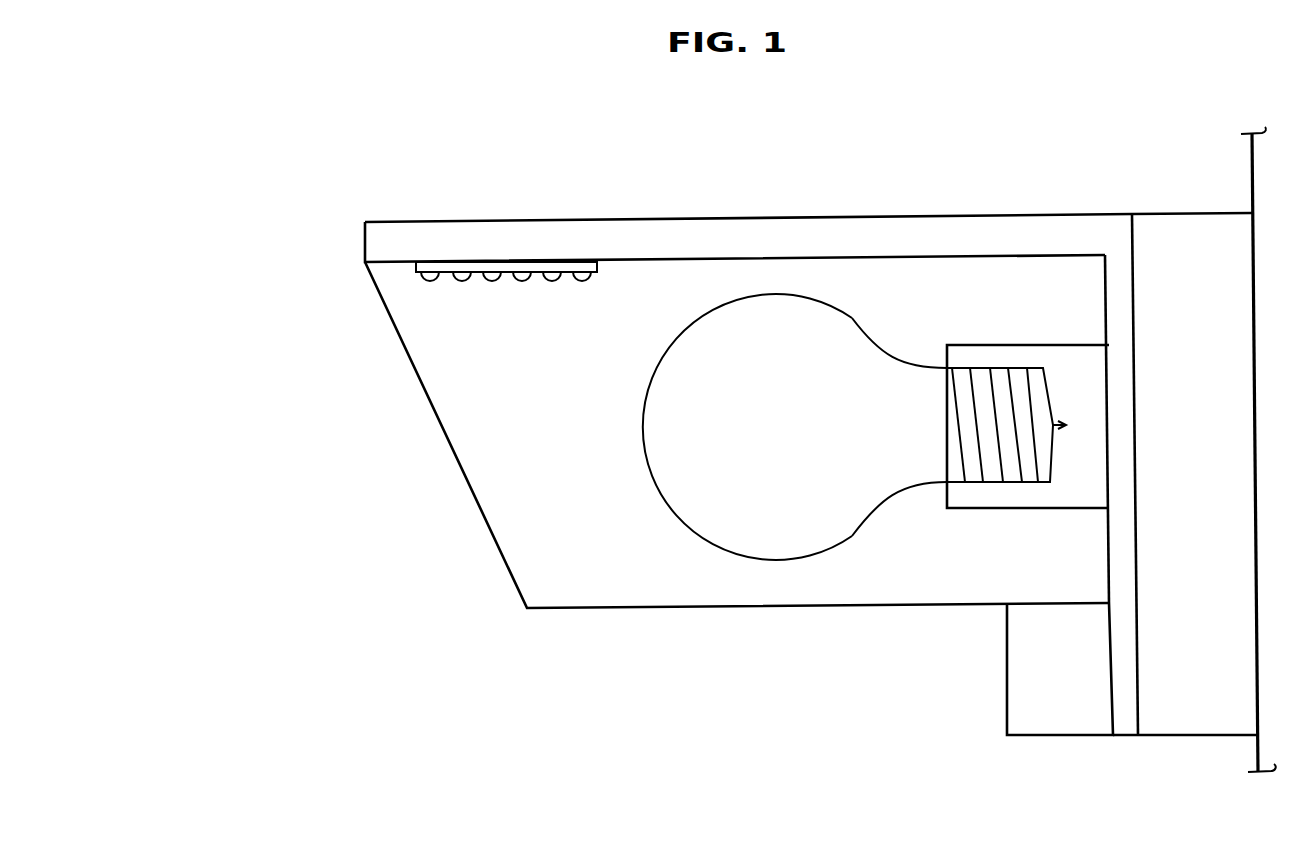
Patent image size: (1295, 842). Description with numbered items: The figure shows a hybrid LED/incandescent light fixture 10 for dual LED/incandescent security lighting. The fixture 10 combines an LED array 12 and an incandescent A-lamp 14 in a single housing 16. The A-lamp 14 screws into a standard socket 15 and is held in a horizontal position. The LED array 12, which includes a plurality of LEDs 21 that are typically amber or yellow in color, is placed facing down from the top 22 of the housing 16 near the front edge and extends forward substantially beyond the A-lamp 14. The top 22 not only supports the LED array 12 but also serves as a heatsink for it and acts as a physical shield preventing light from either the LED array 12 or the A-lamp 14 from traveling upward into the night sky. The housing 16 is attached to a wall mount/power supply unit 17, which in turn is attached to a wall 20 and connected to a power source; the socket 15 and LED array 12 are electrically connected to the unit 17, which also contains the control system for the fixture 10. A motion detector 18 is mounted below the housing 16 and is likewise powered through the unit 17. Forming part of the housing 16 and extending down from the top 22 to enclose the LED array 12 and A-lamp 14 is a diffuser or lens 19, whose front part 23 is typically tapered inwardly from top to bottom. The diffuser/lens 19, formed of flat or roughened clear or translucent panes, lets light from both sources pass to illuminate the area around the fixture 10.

The hybrid LED/incandescent light fixture 10 is at (620, 356).
The LED array 12 is at (524, 341).
The incandescent lamp (A-lamp) 14 is at (695, 542).
The socket 15 is at (1010, 510).
The housing 16 is at (699, 218).
The wall mount/power supply unit 17 is at (1176, 208).
The motion detector 18 is at (1003, 686).
The diffuser or lens 19 is at (608, 435).
The wall 20 is at (1249, 160).
The LEDs 21 is at (462, 284).
The top of housing 22 is at (738, 232).
The front part of diffuser/lens 23 is at (608, 435).